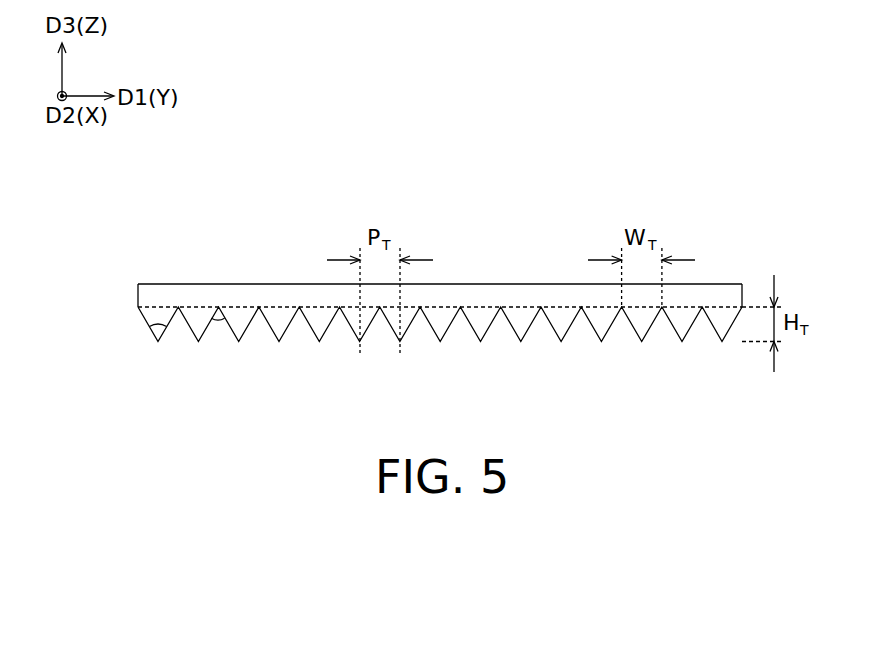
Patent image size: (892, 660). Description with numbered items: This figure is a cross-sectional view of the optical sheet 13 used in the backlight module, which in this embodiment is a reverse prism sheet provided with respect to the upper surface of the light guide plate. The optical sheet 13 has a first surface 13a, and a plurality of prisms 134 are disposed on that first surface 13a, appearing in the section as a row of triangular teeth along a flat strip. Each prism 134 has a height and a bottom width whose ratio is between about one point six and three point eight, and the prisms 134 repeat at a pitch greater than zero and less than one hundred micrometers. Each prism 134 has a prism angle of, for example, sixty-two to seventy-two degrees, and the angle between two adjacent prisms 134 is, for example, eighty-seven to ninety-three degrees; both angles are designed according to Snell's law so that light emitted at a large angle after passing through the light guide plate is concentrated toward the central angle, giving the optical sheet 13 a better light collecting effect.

The optical sheet 13 is at (475, 283).
The first surface 13a is at (237, 303).
The prism 134 is at (719, 321).